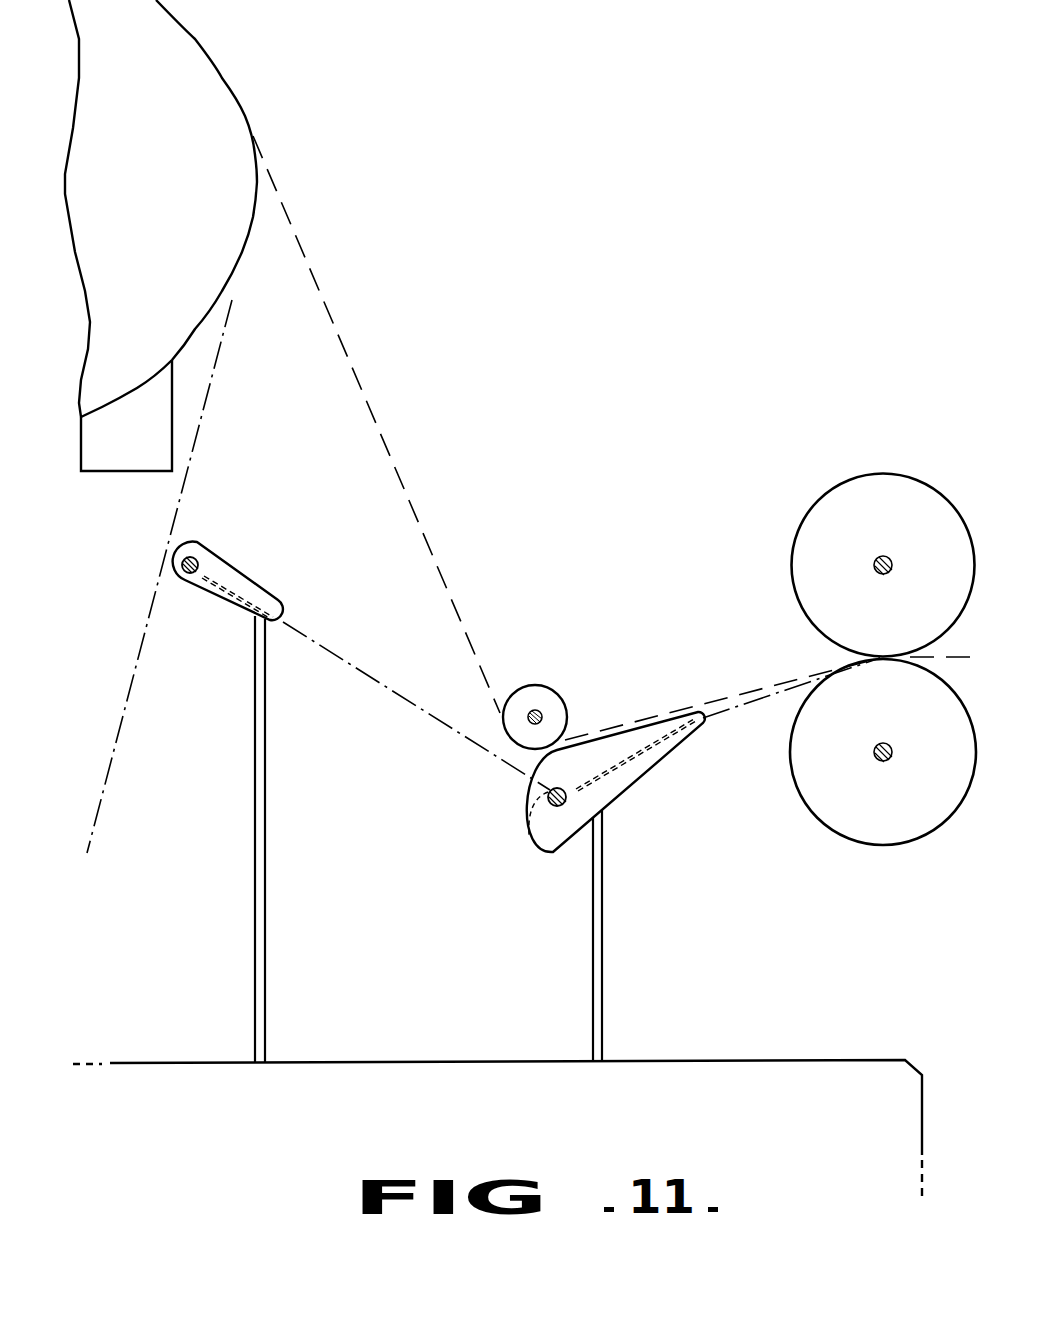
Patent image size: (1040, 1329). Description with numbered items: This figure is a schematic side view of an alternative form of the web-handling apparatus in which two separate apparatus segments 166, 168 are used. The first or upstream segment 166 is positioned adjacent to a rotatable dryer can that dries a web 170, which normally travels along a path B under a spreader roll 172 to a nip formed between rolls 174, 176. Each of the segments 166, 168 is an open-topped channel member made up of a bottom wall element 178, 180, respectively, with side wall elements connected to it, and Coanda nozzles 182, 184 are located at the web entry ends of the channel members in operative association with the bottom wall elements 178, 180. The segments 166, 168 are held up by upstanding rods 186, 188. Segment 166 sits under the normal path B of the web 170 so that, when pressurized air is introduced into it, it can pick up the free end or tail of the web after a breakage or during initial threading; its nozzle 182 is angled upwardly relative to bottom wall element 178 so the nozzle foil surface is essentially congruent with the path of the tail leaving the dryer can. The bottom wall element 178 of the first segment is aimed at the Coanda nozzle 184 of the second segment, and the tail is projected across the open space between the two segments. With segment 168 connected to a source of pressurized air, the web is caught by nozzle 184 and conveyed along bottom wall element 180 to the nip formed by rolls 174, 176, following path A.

The first apparatus segment 166 is at (245, 573).
The second apparatus segment 168 is at (657, 768).
The web 170 is at (209, 395).
The spreader roll 172 is at (553, 690).
The roll 174 is at (883, 474).
The roll 176 is at (883, 847).
The bottom wall element 178 is at (228, 590).
The bottom wall element 180 is at (612, 773).
The Coanda nozzle 182 is at (195, 553).
The Coanda nozzle 184 is at (570, 828).
The upstanding rod 186 is at (262, 858).
The upstanding rod 188 is at (603, 957).
The path A is at (382, 685).
The path B is at (437, 557).